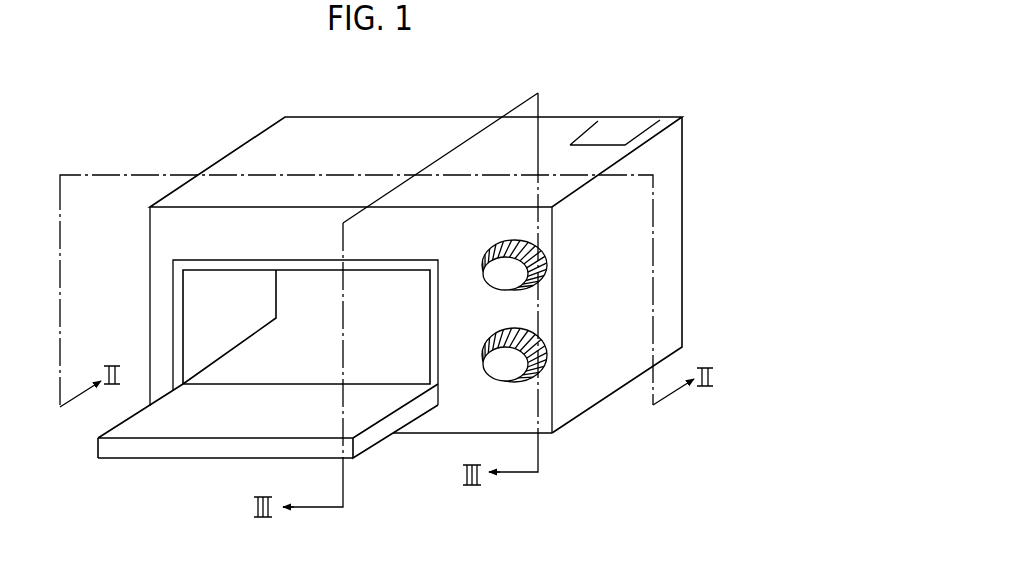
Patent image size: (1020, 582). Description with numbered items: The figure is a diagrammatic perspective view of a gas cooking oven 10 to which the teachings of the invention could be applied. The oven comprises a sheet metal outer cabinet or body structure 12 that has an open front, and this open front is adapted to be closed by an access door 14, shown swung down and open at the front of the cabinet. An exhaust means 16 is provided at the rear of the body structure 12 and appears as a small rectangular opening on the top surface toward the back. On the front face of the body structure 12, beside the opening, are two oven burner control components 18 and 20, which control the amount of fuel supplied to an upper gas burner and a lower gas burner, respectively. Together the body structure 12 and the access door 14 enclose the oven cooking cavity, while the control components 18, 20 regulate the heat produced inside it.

The gas cooking oven 10 is at (328, 111).
The outer cabinet or body structure 12 is at (253, 152).
The access door 14 is at (115, 449).
The exhaust means 16 is at (615, 127).
The oven burner control component 18 is at (510, 276).
The oven burner control component 20 is at (510, 366).